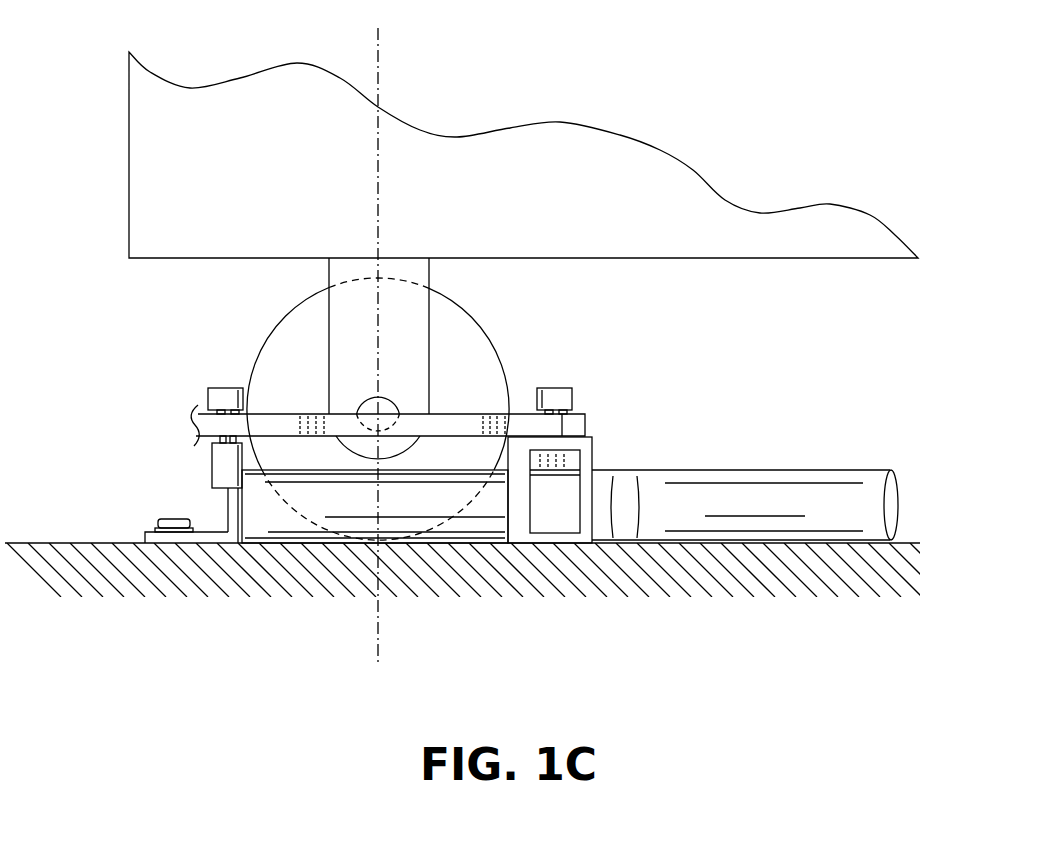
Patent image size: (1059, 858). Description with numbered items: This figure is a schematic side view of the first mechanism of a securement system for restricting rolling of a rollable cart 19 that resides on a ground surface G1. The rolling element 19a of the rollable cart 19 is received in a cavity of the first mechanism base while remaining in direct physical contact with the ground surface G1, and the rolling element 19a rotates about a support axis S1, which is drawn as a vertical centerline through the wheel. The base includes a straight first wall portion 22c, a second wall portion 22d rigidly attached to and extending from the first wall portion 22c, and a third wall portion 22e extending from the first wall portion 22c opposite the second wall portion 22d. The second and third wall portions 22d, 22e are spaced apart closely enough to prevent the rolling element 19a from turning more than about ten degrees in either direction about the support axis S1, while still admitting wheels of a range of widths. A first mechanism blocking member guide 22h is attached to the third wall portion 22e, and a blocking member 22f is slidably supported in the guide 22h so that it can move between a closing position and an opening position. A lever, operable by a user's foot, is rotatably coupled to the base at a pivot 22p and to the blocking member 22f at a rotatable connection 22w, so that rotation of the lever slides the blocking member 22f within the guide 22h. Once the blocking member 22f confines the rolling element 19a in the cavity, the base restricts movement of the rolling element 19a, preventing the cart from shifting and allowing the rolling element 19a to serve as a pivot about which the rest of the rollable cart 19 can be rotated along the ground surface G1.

The rollable cart 19 is at (129, 180).
The support axis S1 is at (378, 199).
The rolling element 19a is at (490, 333).
The pivot 22p is at (220, 395).
The rotatable connection 22w is at (560, 397).
The blocking member 22f is at (575, 460).
The first mechanism blocking member guide 22h is at (585, 497).
The first wall portion 22c is at (228, 508).
The third wall portion 22e is at (745, 571).
The second wall portion 22d is at (767, 503).
The ground surface G1 is at (83, 543).